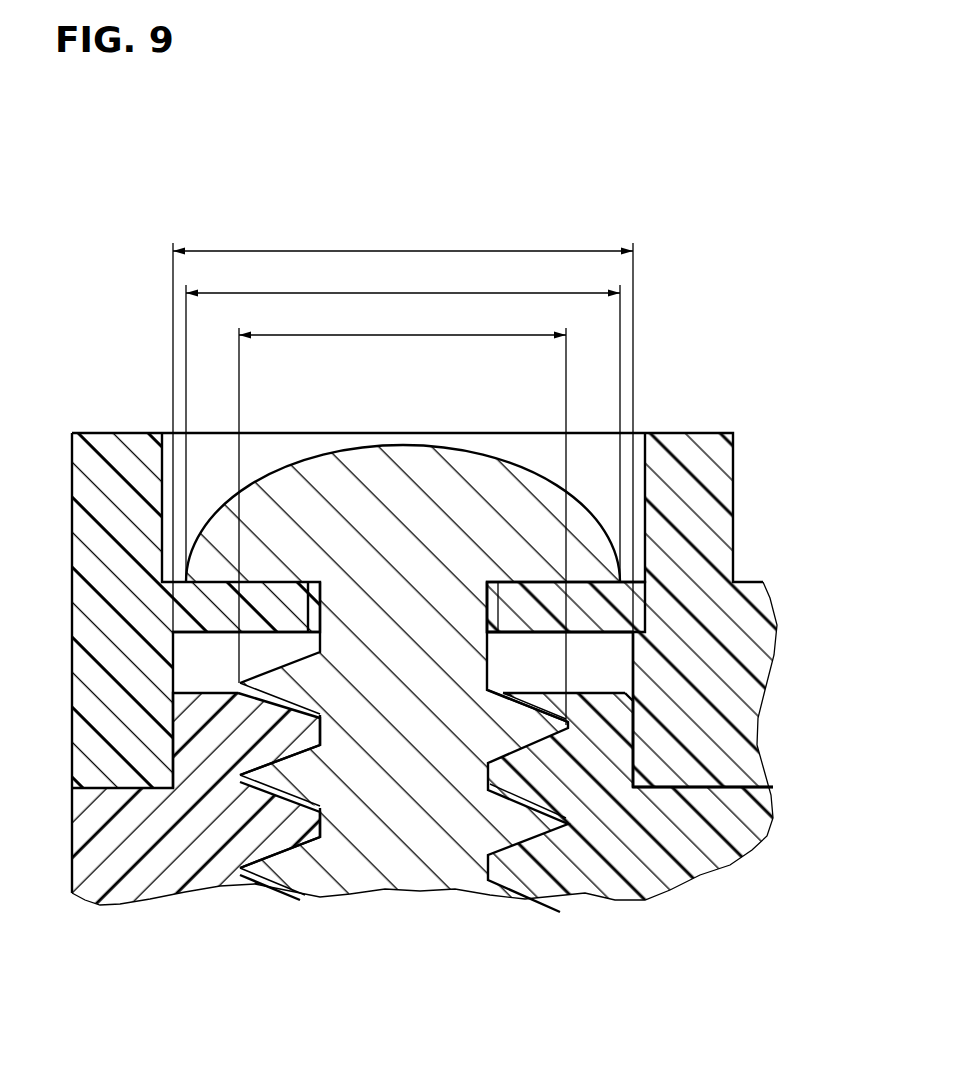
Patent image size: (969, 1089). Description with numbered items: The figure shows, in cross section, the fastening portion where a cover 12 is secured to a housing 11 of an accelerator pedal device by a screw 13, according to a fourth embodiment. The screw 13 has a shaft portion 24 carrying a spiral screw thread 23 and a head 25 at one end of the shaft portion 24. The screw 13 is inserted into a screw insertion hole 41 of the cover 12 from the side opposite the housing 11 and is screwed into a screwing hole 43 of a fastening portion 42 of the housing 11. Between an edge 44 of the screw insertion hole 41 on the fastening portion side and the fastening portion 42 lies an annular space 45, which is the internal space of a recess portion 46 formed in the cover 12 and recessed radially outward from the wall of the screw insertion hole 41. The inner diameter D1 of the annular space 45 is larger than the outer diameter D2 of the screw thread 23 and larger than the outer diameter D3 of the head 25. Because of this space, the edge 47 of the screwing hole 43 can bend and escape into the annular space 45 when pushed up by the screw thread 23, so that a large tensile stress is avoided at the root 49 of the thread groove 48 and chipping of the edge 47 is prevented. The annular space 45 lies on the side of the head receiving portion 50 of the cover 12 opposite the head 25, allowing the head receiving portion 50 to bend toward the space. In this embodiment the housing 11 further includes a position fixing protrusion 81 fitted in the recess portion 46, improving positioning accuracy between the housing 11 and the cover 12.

The housing 11 is at (63, 849).
The cover 12 is at (62, 461).
The screw 13 is at (298, 448).
The screw thread 23 is at (565, 733).
The shaft portion 24 is at (393, 858).
The head 25 is at (360, 452).
The screw insertion hole 41 is at (502, 612).
The fastening portion 42 is at (600, 845).
The screwing hole 43 is at (500, 757).
The edge of screw insertion hole 44 is at (500, 657).
The annular space 45 is at (502, 658).
The recess portion 46 is at (195, 637).
The edge of screwing hole 47 is at (517, 710).
The thread groove 48 is at (637, 788).
The root of thread groove 49 is at (535, 708).
The head receiving portion 50 is at (518, 600).
The position fixing protrusion 81 is at (223, 730).
The inner diameter of annular space D1 is at (403, 429).
The outer diameter of screw thread D2 is at (402, 518).
The outer diameter of head D3 is at (403, 425).